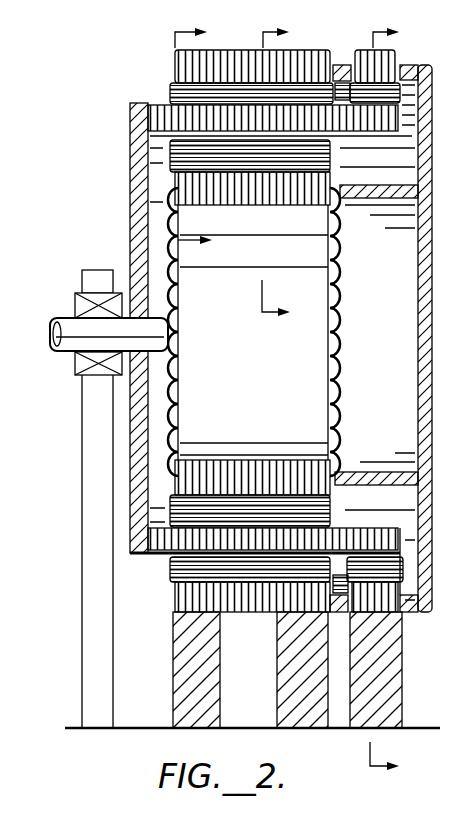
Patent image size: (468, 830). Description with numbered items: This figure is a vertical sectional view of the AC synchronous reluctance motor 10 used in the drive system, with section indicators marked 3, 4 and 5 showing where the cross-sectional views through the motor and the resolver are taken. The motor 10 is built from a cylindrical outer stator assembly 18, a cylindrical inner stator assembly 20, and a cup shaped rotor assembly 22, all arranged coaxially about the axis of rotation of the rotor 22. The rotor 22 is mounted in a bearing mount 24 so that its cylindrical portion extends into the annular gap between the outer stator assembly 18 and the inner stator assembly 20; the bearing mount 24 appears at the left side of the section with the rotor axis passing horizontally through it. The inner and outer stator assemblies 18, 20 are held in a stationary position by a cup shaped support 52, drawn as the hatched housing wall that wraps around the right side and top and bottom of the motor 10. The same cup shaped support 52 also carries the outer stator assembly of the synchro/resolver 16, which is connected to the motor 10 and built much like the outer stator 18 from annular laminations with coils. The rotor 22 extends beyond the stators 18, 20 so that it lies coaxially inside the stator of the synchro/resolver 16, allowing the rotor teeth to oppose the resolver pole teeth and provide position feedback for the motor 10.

The AC synchronous reluctance motor 10 is at (119, 104).
The synchro/resolver 16 is at (404, 46).
The cylindrical outer stator assembly 18 is at (177, 67).
The cylindrical inner stator assembly 20 is at (178, 191).
The cup shaped rotor assembly 22 is at (153, 118).
The bearing mount 24 is at (74, 303).
The cup shaped support 52 is at (432, 500).
The section line 3- 3 is at (200, 139).
The section line 4- 4 is at (283, 177).
The section line 5- 5 is at (392, 402).